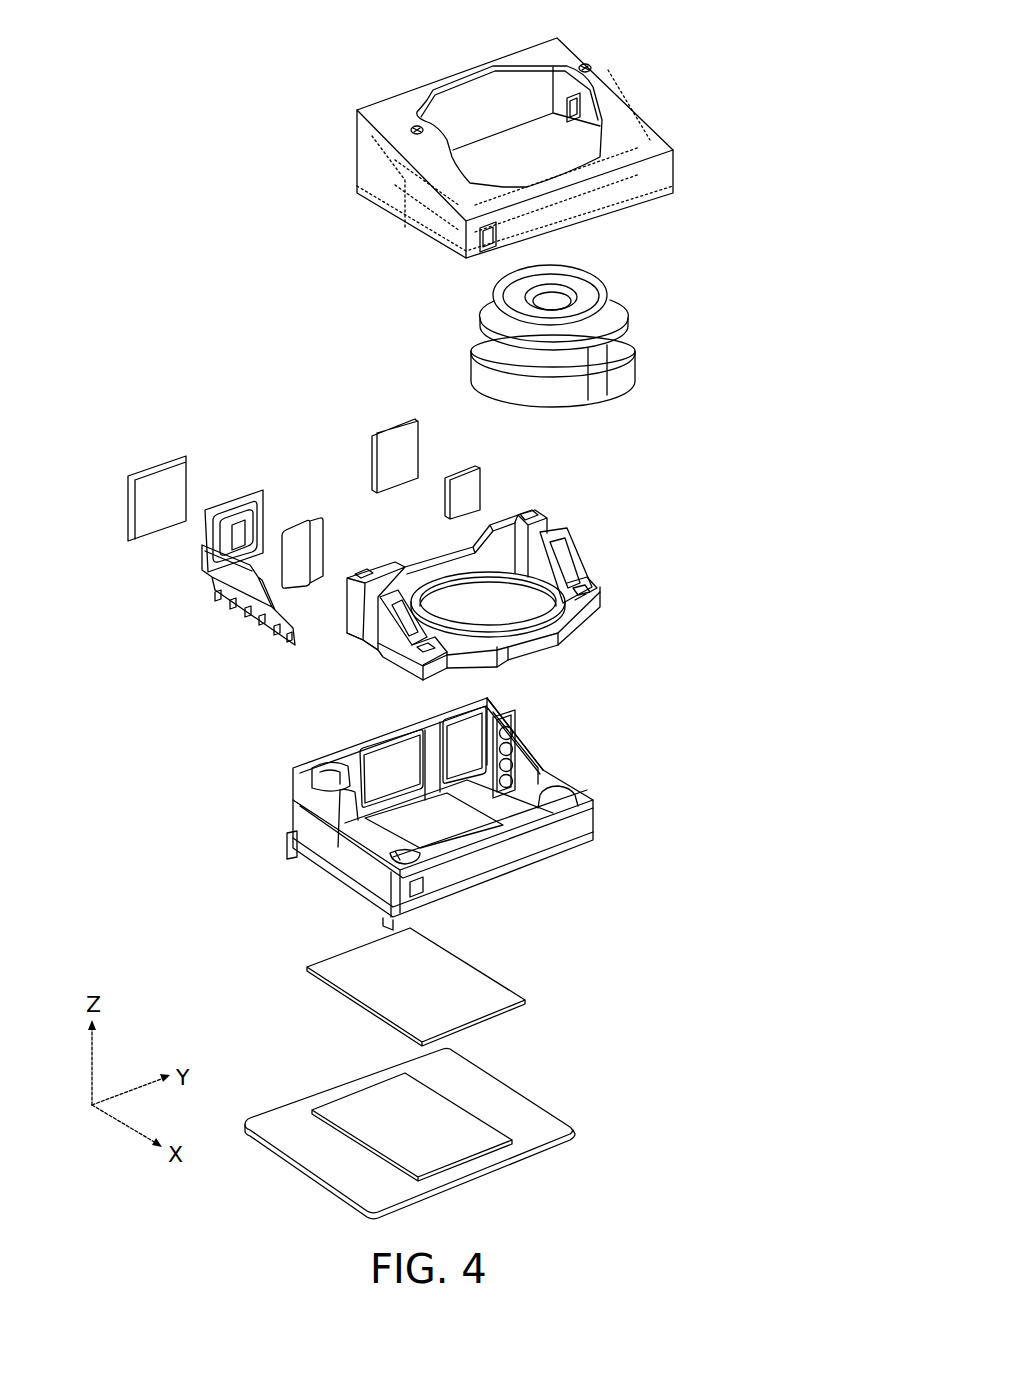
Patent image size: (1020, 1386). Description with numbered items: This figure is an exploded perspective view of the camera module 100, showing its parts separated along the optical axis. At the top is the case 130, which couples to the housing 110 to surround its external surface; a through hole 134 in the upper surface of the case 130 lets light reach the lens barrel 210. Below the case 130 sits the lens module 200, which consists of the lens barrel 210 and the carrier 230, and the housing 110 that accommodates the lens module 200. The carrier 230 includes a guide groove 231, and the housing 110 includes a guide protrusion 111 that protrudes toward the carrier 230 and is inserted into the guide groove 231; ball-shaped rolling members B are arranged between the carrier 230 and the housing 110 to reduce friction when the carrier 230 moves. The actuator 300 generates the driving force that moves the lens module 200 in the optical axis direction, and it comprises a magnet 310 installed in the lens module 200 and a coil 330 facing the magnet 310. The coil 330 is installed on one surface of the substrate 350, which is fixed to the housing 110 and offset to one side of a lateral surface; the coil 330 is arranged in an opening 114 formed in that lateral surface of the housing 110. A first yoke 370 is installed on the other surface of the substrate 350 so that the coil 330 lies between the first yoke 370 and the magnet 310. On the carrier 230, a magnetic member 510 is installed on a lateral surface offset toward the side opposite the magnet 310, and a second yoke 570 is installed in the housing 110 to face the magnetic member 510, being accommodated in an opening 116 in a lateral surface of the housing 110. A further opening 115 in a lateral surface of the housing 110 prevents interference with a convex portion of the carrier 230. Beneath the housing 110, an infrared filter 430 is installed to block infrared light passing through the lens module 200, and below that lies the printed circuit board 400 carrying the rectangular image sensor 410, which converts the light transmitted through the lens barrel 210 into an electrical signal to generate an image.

The camera module 100 is at (163, 224).
The housing 110 is at (553, 842).
The guide protrusion 111 is at (527, 711).
The opening 114 is at (330, 767).
The opening 115 is at (393, 761).
The opening 116 is at (467, 736).
The rolling member B is at (509, 735).
The case 130 is at (357, 160).
The through hole 134 is at (490, 110).
The lens module 200 is at (727, 313).
The lens barrel 210 is at (633, 360).
The carrier 230 is at (512, 516).
The guide groove 231 is at (545, 516).
The actuator 300 is at (322, 437).
The magnet 310 is at (306, 519).
The coil 330 is at (245, 508).
The substrate 350 is at (202, 547).
The first yoke 370 is at (157, 470).
The printed circuit board 400 is at (537, 1122).
The image sensor 410 is at (452, 1101).
The infrared filter 430 is at (508, 993).
The magnetic member 510 is at (464, 470).
The second yoke 570 is at (394, 426).